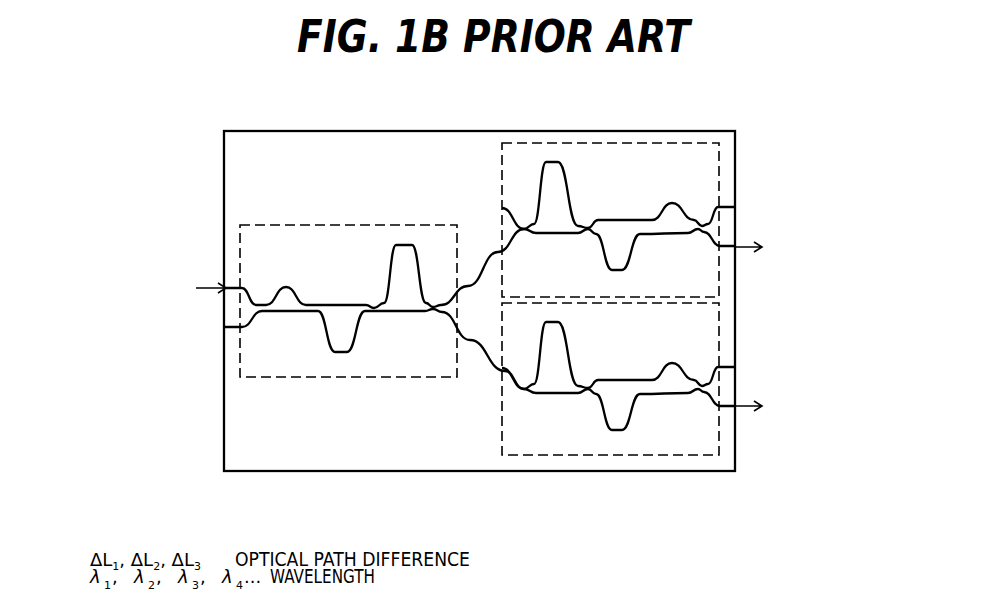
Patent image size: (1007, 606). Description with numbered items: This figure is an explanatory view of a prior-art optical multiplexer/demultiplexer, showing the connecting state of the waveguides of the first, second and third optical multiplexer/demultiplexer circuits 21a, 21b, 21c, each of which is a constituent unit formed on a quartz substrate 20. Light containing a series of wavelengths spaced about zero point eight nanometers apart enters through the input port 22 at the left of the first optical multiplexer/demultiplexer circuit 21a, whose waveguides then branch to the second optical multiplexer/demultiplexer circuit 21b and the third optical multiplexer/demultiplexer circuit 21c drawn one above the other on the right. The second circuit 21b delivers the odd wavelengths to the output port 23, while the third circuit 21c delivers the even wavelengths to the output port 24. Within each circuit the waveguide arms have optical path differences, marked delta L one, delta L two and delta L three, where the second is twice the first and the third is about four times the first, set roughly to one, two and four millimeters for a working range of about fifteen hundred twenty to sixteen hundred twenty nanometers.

The quartz substrate 20 is at (263, 471).
The first optical multiplexer/demultiplexer circuit 21a is at (336, 225).
The second optical multiplexer/demultiplexer circuit 21b is at (693, 143).
The third optical multiplexer/demultiplexer circuit 21c is at (575, 455).
The input port 22 is at (224, 284).
The output port 23 is at (738, 250).
The output port 24 is at (738, 409).